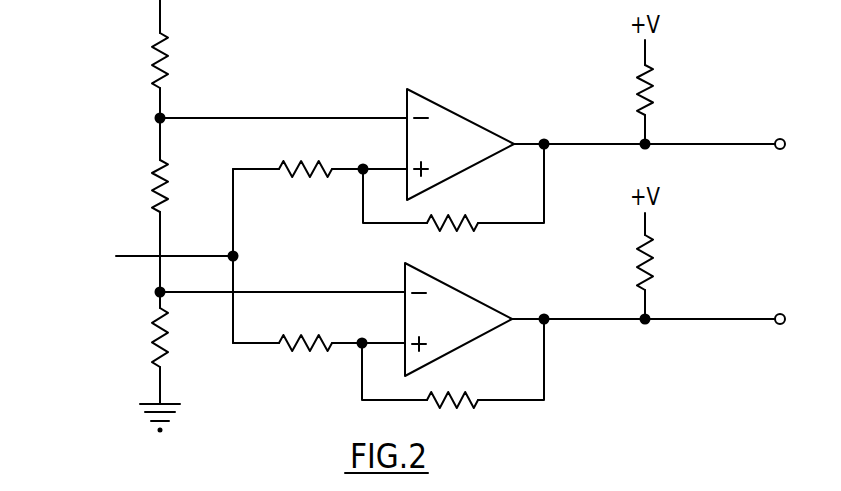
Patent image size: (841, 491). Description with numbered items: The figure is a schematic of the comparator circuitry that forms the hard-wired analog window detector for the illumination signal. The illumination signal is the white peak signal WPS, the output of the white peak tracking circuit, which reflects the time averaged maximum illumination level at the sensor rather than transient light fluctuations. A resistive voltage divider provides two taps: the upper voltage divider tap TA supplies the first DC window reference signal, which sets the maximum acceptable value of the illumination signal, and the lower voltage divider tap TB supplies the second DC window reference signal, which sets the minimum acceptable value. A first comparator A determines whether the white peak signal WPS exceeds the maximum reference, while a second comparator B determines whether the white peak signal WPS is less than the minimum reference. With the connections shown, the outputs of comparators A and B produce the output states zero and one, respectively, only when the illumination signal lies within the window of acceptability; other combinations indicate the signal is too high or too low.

The voltage divider tap TA is at (160, 118).
The voltage divider tap TB is at (160, 292).
The white peak signal WPS is at (150, 256).
The first comparator A is at (468, 118).
The comparator B is at (466, 292).